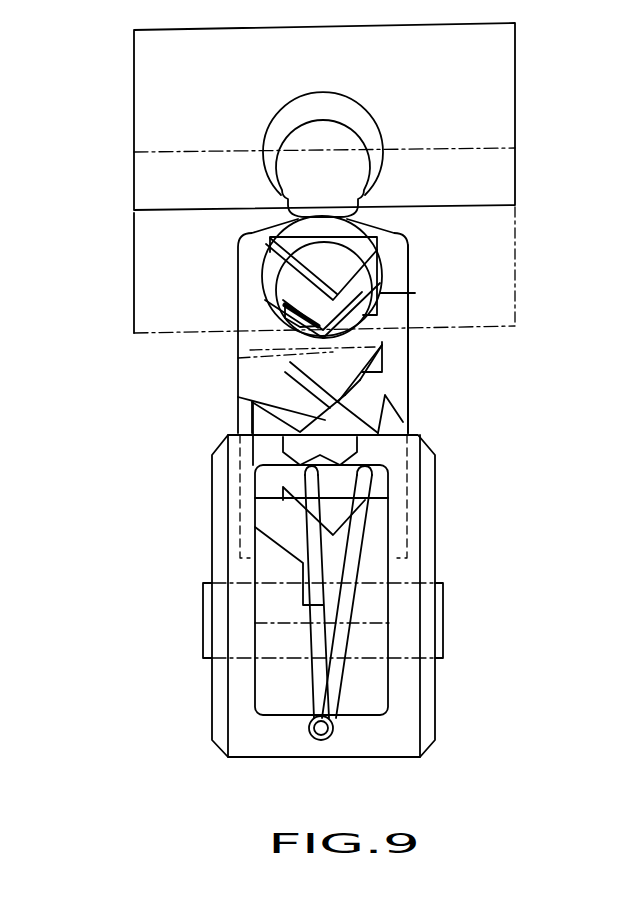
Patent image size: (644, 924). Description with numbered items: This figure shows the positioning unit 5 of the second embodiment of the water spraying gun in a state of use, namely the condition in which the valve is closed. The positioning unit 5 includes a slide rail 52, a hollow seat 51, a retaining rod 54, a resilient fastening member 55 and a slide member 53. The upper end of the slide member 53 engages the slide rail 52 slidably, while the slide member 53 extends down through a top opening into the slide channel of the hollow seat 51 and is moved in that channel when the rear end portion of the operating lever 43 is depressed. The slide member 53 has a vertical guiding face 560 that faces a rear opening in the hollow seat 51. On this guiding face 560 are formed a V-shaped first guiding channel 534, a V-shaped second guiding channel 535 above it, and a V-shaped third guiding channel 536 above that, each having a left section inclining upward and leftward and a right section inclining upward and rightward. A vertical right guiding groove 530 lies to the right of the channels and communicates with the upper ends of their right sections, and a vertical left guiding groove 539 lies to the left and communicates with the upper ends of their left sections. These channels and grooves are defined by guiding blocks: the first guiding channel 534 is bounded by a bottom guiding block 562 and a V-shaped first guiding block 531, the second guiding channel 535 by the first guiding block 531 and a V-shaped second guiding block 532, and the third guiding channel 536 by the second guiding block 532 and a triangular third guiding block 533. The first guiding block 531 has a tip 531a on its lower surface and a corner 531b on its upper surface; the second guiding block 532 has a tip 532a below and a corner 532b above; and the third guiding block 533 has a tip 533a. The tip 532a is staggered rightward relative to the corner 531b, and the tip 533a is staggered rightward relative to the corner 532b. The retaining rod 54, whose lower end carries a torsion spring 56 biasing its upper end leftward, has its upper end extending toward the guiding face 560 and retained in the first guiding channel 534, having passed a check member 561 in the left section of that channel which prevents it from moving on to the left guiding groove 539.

The positioning unit 5 is at (104, 200).
The operating lever 43 is at (515, 172).
The slide rail 52 is at (363, 138).
The slide member 53 is at (237, 250).
The right guiding groove 530 is at (396, 372).
The first guiding block 531 is at (250, 352).
The tip 531a is at (237, 430).
The corner 531b is at (388, 395).
The second guiding block 532 is at (280, 303).
The tip 532a is at (300, 327).
The corner 532b is at (262, 282).
The third guiding block 533 is at (398, 245).
The tip 533a is at (385, 303).
The first guiding channel 534 is at (423, 443).
The second guiding channel 535 is at (385, 392).
The third guiding channel 536 is at (385, 330).
The left guiding groove 539 is at (134, 333).
The vertical guiding face 560 is at (395, 342).
The check member 561 is at (237, 397).
The bottom guiding block 562 is at (228, 445).
The hollow seat 51 is at (212, 708).
The retaining rod 54 is at (350, 608).
The resilient fastening member 55 is at (203, 600).
The torsion spring 56 is at (333, 727).